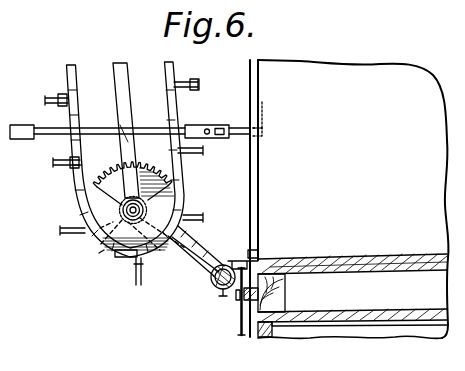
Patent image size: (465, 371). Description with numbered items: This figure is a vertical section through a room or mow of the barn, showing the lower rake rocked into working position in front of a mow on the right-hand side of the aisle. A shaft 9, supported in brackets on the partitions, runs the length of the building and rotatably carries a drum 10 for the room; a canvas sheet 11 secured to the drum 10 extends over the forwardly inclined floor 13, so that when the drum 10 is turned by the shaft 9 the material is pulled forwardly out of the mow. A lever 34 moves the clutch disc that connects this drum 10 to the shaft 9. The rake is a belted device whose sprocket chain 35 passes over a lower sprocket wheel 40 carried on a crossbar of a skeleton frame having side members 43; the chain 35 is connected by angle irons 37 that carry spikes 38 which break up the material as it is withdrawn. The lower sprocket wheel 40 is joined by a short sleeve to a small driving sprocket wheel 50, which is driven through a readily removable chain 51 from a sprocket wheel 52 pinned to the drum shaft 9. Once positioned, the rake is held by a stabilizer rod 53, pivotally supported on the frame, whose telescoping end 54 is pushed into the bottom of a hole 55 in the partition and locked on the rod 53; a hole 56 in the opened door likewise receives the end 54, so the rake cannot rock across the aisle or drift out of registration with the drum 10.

The shaft 9 is at (235, 260).
The drum 10 is at (223, 289).
The canvas sheet 11 is at (337, 259).
The inclined floor 13 is at (375, 257).
The lever 34 is at (240, 333).
The sprocket chain 35 is at (81, 195).
The angle iron 37 is at (67, 95).
The spike 38 is at (197, 83).
The lower sprocket wheel 40 is at (165, 205).
The side member 43 is at (117, 79).
The driving sprocket wheel 50 is at (99, 253).
The chain 51 is at (207, 241).
The sprocket wheel 52 is at (209, 284).
The stabilizer rod 53 is at (163, 110).
The telescoping end 54 is at (235, 128).
The hole 55 is at (263, 128).
The door hole 56 is at (262, 102).